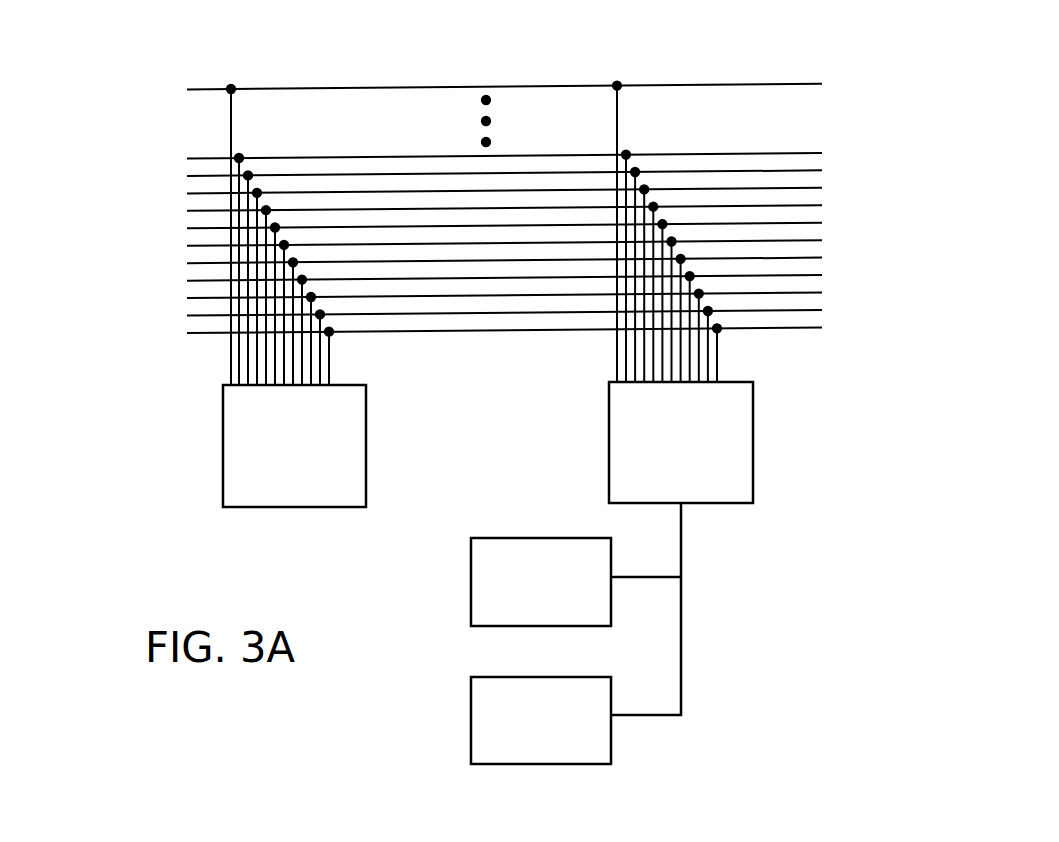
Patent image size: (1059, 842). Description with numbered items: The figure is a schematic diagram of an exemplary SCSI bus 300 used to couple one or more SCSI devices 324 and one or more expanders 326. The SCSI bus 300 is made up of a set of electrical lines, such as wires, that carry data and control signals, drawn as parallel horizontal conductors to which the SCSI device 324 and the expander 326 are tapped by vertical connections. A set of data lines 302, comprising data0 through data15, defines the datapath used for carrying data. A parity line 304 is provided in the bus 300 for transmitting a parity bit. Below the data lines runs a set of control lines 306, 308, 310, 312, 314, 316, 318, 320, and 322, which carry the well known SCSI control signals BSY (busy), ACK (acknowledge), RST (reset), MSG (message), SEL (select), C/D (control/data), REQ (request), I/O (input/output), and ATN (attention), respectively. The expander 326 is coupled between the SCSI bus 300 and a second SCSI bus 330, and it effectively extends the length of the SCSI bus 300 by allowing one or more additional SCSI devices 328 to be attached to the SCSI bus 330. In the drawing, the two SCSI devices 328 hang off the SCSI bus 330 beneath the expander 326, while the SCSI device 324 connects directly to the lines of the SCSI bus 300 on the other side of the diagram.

The SCSI bus 300 is at (737, 46).
The set of data lines 302 is at (108, 168).
The parity line 304 is at (275, 174).
The BSY control line 306 is at (778, 188).
The ACK control line 308 is at (323, 208).
The RST control line 310 is at (518, 222).
The MSG control line 312 is at (693, 240).
The SEL control line 314 is at (397, 262).
The C/D control line 316 is at (476, 280).
The REQ control line 318 is at (537, 297).
The I/O control line 320 is at (583, 313).
The ATN control line 322 is at (793, 330).
The SCSI device 324 is at (366, 468).
The expander 326 is at (753, 473).
The SCSI device 328 is at (515, 538).
The SCSI bus 330 is at (681, 640).